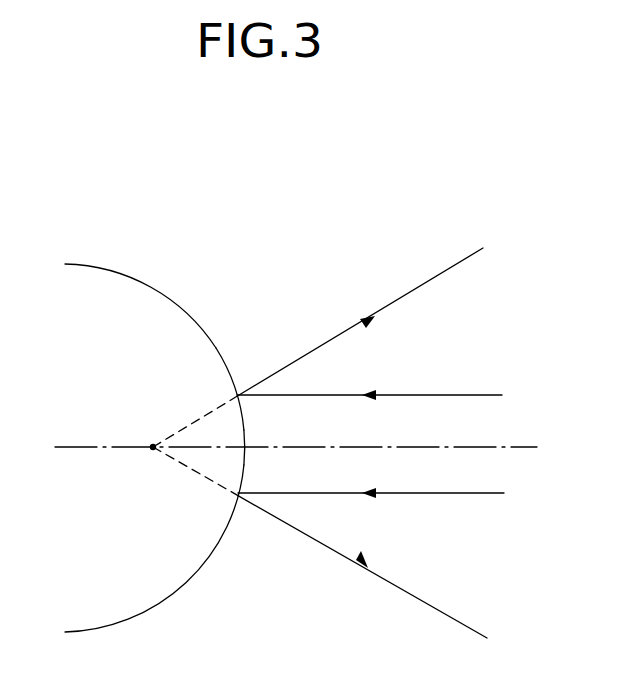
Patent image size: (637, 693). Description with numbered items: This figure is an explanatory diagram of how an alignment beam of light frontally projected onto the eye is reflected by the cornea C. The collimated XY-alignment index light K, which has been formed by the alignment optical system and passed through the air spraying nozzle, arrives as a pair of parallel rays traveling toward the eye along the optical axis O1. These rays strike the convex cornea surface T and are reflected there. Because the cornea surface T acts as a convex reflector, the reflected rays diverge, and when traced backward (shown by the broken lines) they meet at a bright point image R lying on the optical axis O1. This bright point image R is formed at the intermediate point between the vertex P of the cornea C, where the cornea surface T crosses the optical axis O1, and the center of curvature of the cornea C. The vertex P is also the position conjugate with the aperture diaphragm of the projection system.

The cornea C is at (205, 255).
The cornea surface T is at (206, 333).
The vertex of the cornea P is at (248, 443).
The bright point image R is at (153, 450).
The XY-alignment index light K is at (455, 393).
The optical axis O1 is at (503, 443).